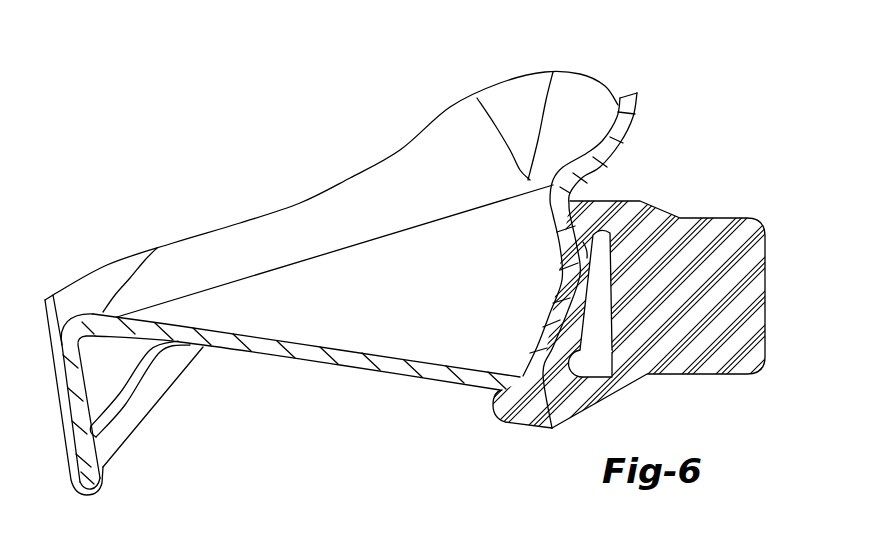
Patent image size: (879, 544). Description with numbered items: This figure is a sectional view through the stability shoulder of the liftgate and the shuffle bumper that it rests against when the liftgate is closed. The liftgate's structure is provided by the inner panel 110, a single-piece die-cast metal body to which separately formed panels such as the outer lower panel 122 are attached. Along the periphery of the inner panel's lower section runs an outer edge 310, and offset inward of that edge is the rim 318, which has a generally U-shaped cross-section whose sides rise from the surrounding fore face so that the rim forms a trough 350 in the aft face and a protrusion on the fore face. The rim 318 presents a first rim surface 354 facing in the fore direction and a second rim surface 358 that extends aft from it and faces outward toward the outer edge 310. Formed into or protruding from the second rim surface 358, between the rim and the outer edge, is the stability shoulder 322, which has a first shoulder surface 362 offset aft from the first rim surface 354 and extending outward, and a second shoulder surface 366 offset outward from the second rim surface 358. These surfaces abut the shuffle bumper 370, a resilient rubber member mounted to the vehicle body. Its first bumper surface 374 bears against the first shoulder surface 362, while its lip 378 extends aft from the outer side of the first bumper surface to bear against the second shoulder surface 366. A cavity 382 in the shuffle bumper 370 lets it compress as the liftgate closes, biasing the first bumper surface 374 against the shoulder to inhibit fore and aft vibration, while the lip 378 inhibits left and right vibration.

The inner panel 110 is at (82, 317).
The outer lower panel 122 is at (52, 340).
The outer edge 310 is at (100, 489).
The rim 318 is at (631, 93).
The stability shoulder 322 is at (347, 360).
The trough 350 is at (613, 110).
The first rim surface 354 is at (637, 109).
The second rim surface 358 is at (586, 178).
The first shoulder surface 362 is at (583, 242).
The second shoulder surface 366 is at (270, 357).
The shuffle bumper 370 is at (752, 215).
The first bumper surface 374 is at (557, 317).
The lip 378 is at (493, 403).
The cavity 382 is at (613, 353).